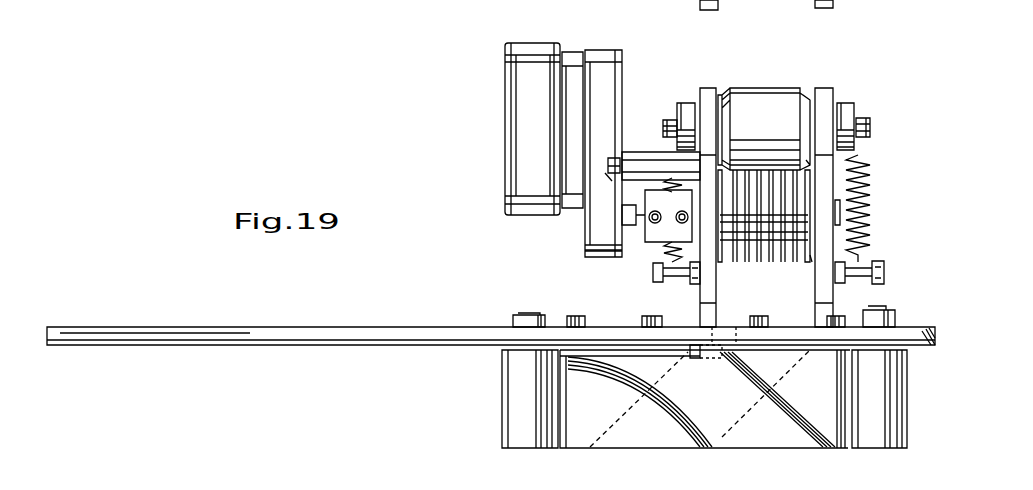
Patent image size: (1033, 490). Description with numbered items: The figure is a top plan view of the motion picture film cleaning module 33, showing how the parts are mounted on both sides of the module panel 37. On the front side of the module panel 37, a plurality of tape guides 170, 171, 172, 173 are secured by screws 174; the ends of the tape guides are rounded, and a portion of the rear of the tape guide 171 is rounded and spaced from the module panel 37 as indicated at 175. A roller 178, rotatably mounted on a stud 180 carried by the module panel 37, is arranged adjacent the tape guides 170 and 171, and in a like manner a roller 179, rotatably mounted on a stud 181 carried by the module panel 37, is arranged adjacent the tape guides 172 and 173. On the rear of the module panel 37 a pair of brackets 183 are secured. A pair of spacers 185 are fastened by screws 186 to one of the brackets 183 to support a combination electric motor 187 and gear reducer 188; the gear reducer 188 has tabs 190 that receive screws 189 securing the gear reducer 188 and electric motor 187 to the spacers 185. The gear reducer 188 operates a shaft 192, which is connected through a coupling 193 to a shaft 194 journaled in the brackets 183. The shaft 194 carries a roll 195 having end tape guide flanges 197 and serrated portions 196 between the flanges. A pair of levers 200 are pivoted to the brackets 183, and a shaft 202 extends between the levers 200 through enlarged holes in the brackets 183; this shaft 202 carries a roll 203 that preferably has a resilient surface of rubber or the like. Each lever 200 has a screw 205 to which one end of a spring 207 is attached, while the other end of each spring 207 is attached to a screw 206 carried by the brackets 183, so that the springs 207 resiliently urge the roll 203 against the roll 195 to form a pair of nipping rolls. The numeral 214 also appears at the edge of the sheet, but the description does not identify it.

The cleaning module 33 is at (320, 0).
The module panel 37 is at (458, 326).
The tape guide 170 is at (790, 415).
The tape guide 171 is at (662, 420).
The tape guide 172 is at (745, 420).
The tape guide 173 is at (617, 420).
The screws 174 is at (583, 300).
The rounded spaced portion 175 is at (618, 349).
The roller 178 is at (886, 435).
The roller 179 is at (530, 440).
The stud 180 is at (883, 309).
The stud 181 is at (520, 314).
The brackets 183 is at (718, 8).
The spacers 185 is at (640, 152).
The screws 186 is at (726, 156).
The electric motor 187 is at (535, 50).
The gear reducer 188 is at (600, 58).
The screws 189 is at (608, 165).
The tabs 190 is at (616, 176).
The shaft 192 is at (636, 218).
The coupling 193 is at (660, 232).
The shaft 194 is at (688, 212).
The roll 195 is at (735, 255).
The serrated portions 196 is at (770, 255).
The end tape guide flanges 197 is at (810, 258).
The levers 200 is at (688, 103).
The shaft 202 is at (725, 90).
The roll 203 is at (776, 95).
The screw 205 is at (672, 120).
The screws 206 is at (656, 274).
The springs 207 is at (664, 258).
The member 214 is at (162, 11).